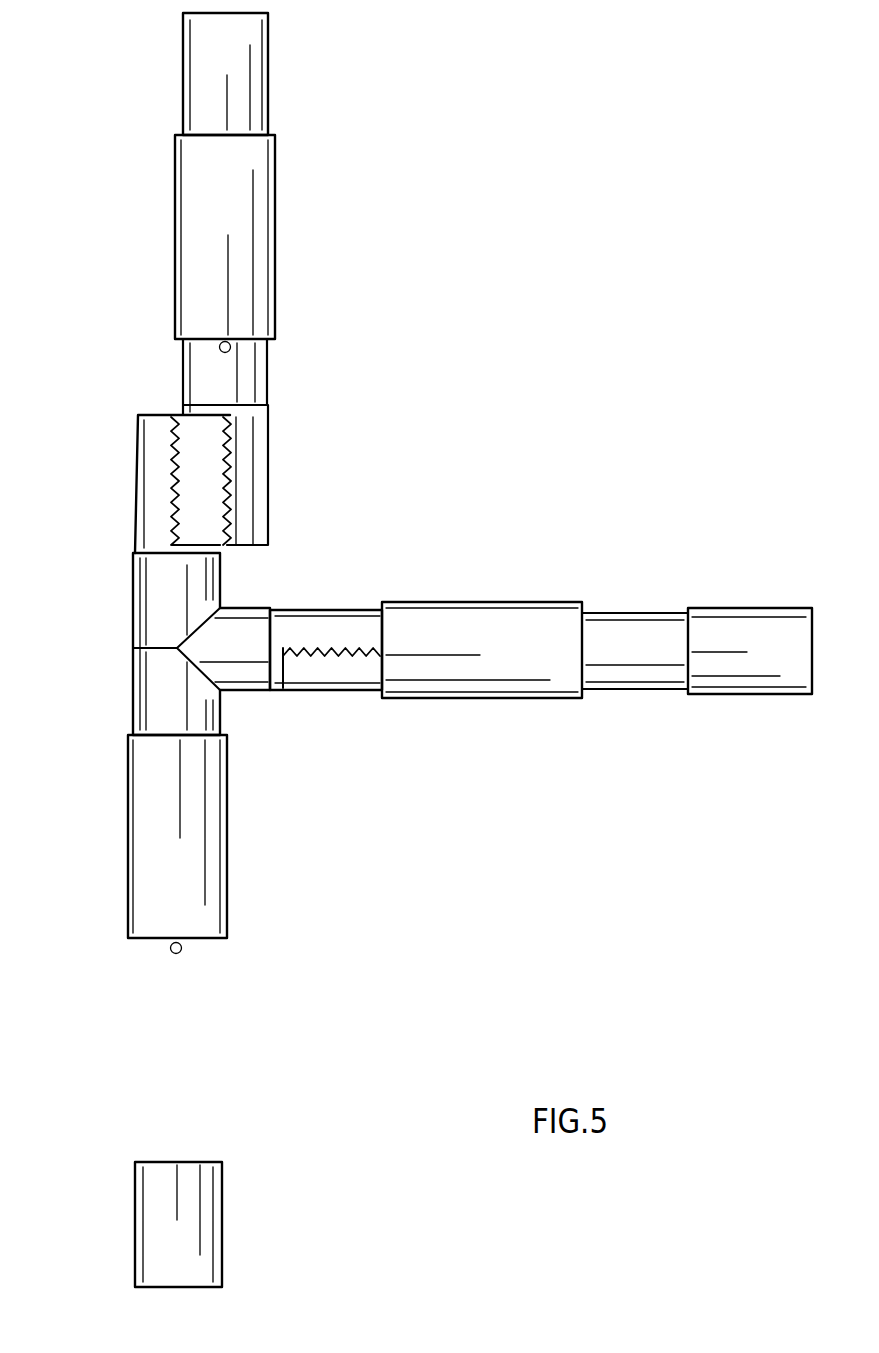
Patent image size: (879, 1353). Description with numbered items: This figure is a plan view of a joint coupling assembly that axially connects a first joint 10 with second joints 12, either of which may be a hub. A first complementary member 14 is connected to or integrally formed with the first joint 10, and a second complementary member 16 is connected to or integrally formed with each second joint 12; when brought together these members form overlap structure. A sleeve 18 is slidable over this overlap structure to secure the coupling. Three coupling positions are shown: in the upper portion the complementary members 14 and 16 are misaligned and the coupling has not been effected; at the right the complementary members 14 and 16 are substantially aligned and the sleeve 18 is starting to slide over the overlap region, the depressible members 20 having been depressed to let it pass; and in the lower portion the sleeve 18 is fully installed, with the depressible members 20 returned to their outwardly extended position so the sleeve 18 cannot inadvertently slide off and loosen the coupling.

The first joint 10 is at (228, 678).
The second joint 12 is at (237, 80).
The first complementary member 14 is at (146, 512).
The second complementary member 16 is at (248, 490).
The sleeve 18 is at (242, 265).
The depressible member 20 is at (230, 352).